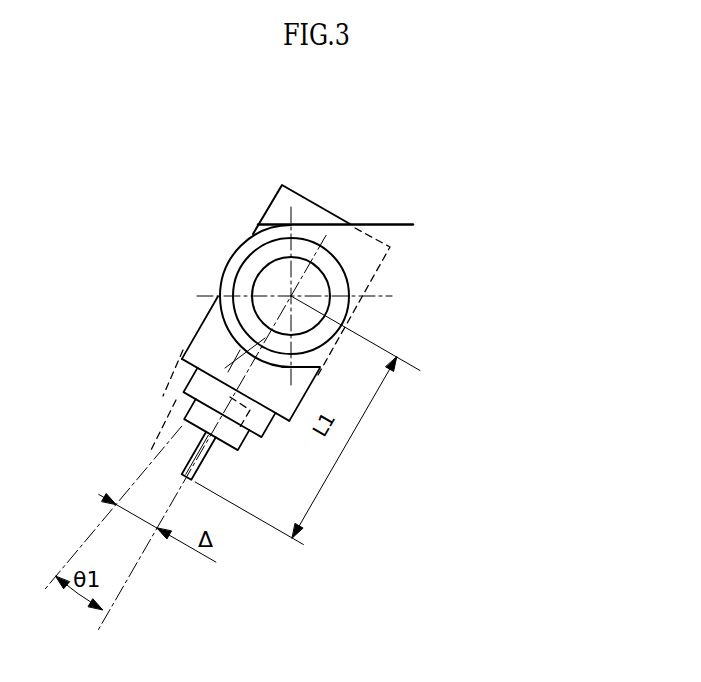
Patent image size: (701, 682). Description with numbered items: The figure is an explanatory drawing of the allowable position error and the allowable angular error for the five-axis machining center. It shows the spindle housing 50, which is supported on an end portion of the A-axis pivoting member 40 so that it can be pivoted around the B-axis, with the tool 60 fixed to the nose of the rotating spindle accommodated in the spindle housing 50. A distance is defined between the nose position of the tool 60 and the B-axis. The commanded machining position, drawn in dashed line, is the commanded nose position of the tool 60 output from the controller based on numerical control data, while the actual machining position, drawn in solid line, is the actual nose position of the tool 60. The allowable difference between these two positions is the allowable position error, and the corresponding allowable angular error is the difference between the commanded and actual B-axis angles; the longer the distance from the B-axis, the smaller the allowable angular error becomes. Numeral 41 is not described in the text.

The A-axis pivoting member 40 is at (398, 223).
The tool holder body 41 is at (257, 233).
The spindle housing 50 is at (282, 185).
The tool 60 is at (205, 452).